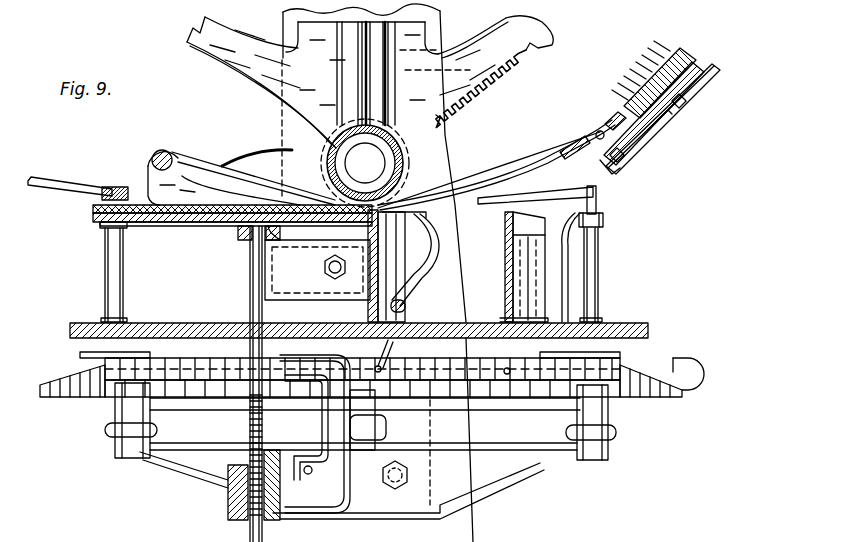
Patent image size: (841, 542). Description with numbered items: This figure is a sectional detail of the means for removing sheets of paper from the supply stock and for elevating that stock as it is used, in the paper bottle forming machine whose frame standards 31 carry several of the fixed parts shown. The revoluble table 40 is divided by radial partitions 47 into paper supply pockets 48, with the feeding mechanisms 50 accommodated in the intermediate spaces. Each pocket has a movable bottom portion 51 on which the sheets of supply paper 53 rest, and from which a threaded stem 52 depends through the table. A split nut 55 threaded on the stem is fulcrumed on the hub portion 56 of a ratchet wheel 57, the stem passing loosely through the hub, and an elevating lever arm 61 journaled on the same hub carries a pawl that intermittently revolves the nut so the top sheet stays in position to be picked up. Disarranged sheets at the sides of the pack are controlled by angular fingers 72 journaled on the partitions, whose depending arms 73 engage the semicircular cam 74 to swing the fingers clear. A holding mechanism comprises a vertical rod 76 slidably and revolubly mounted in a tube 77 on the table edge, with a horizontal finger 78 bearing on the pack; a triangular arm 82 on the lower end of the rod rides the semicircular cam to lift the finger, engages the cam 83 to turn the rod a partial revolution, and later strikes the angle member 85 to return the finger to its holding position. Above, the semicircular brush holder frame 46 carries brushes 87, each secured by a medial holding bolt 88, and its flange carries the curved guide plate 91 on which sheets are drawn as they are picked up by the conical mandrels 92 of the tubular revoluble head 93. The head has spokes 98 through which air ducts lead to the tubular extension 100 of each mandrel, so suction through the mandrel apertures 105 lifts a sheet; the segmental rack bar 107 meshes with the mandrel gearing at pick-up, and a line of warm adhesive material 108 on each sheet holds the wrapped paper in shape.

The standards 31 is at (473, 530).
The table 40 is at (650, 334).
The brush holder frame 46 is at (696, 92).
The radial partitions 47 is at (368, 300).
The paper supply pockets 48 is at (147, 226).
The feeding mechanisms 50 is at (410, 290).
The movable bottom portions 51 is at (208, 228).
The threaded stems 52 is at (250, 290).
The sheets of supply paper 53 is at (198, 204).
The split nuts 55 is at (222, 475).
The hub portions 56 is at (278, 462).
The ratchet wheels 57 is at (230, 492).
The elevating lever arms 61 is at (228, 482).
The angular fingers 72 is at (436, 246).
The arms 73 is at (388, 351).
The semicircular cam 74 is at (674, 396).
The vertically extending rod 76 is at (598, 205).
The tube 77 is at (105, 280).
The horizontally projecting finger 78 is at (57, 178).
The arms 82 is at (82, 358).
The cam 83 is at (207, 386).
The angle member 85 is at (690, 362).
The brushes 87 is at (672, 58).
The medial holding bolt 88 is at (684, 108).
The curved guide plate 91 is at (518, 178).
The conical mandrels 92 is at (404, 160).
The tubular revoluble head 93 is at (282, 105).
The spokes 98 is at (343, 45).
The tubular extension 100 is at (365, 163).
The apertures 105 is at (268, 160).
The segmental rack bar 107 is at (552, 42).
The line of warm adhesive material 108 is at (100, 199).